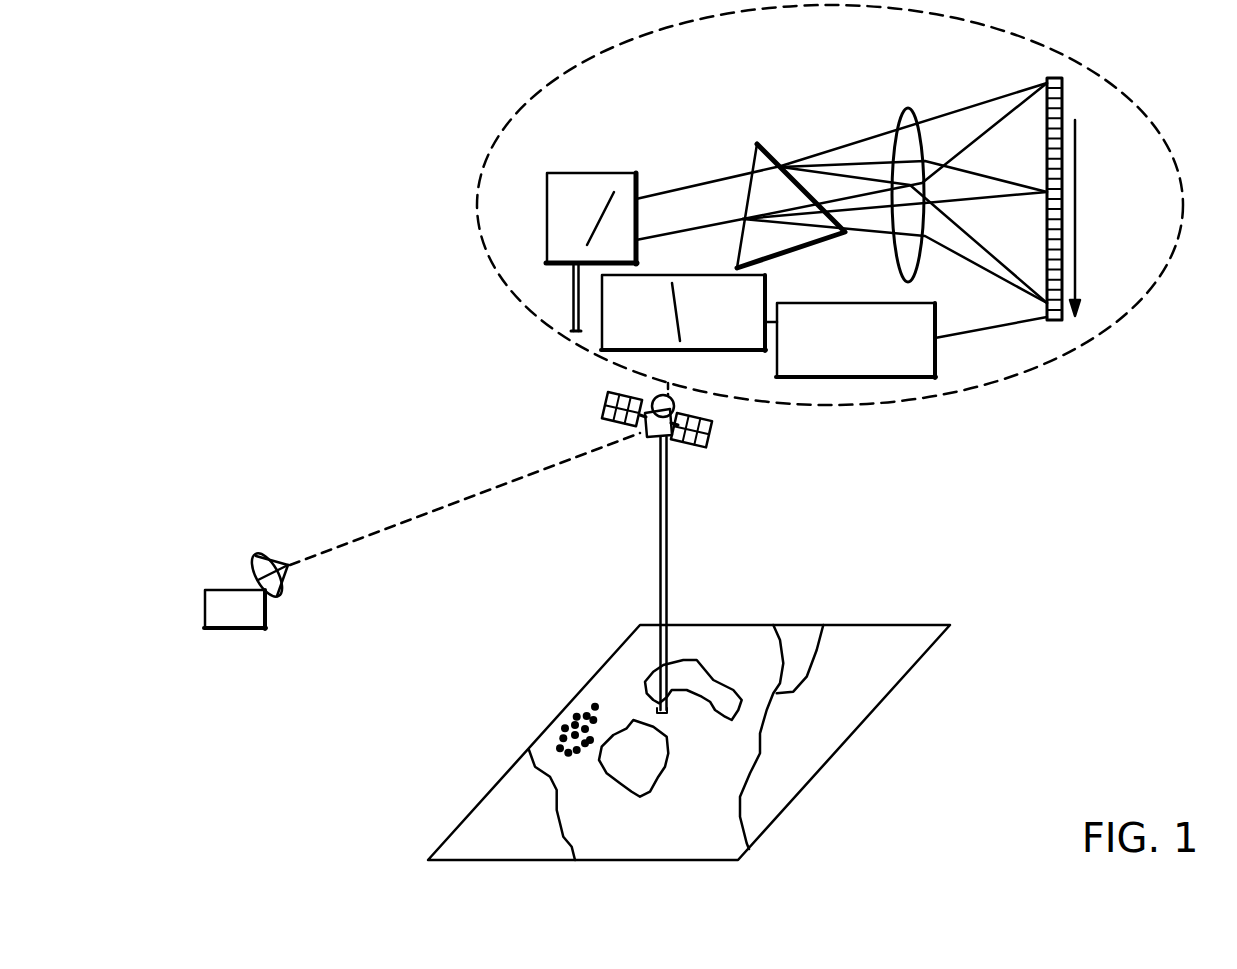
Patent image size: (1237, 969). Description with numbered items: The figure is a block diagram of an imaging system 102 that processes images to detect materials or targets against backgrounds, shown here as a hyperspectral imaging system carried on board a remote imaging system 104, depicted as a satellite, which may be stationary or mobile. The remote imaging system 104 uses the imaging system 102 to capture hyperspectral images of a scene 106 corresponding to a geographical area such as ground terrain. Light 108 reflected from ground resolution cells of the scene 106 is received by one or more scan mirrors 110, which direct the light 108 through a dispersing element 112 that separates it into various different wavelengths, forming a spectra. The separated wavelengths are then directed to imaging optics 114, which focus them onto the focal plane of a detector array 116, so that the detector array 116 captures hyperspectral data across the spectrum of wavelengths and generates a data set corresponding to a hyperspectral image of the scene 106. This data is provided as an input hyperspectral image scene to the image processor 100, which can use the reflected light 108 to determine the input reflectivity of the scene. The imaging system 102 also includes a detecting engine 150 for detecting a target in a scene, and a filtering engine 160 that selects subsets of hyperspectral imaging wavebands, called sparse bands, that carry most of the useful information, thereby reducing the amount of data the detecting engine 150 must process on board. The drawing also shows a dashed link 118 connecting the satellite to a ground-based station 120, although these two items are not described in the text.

The image processor 100 is at (855, 377).
The imaging system 102 is at (1008, 382).
The remote imaging system 104 is at (711, 445).
The scene 106 is at (537, 739).
The light 108 is at (573, 289).
The scan mirrors 110 is at (594, 173).
The dispersing element 112 is at (770, 156).
The imaging optics 114 is at (907, 108).
The detector array 116 is at (1052, 78).
The downlink 118 is at (453, 502).
The ground station 120 is at (222, 590).
The detecting engine 150 is at (619, 324).
The filtering engine 160 is at (700, 324).